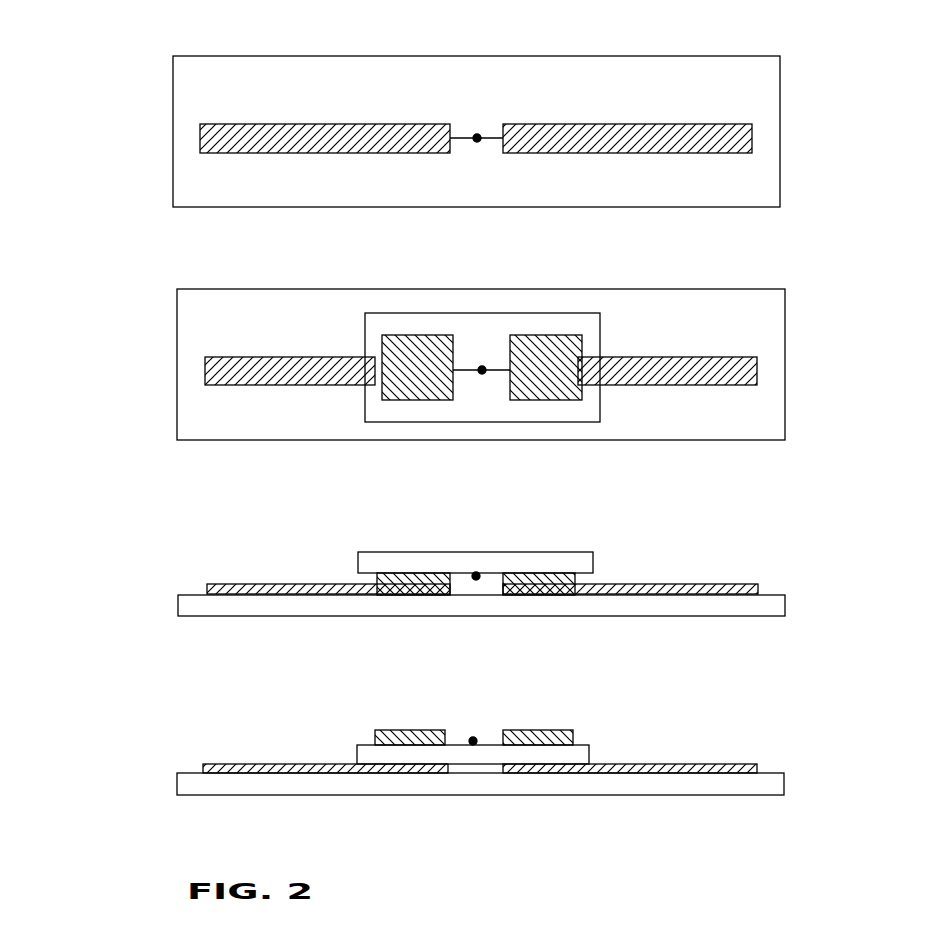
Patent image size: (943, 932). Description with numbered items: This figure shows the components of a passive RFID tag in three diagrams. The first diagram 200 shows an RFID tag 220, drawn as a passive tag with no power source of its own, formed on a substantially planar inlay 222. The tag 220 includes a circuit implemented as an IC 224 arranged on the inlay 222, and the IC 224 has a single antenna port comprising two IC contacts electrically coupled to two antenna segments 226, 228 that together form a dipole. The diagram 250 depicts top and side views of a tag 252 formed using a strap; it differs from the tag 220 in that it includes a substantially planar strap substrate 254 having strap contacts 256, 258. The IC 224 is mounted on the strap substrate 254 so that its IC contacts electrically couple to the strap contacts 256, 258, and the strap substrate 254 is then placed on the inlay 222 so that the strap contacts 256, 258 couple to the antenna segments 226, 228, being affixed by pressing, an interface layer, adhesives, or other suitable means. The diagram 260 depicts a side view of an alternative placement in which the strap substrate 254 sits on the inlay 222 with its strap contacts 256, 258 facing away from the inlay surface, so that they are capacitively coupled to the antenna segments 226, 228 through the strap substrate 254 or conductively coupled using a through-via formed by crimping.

The first stage of fabrication process 200 is at (37, 46).
The RFID tag 220 is at (170, 127).
The inlay 222 is at (765, 93).
The IC 224 is at (478, 134).
The antenna segment 226 is at (356, 133).
The antenna segment 228 is at (613, 133).
The diagram 250 is at (30, 301).
The tag 252 is at (175, 442).
The strap substrate 254 is at (377, 413).
The strap contact 256 is at (420, 400).
The strap contact 258 is at (558, 400).
The diagram 260 is at (33, 756).